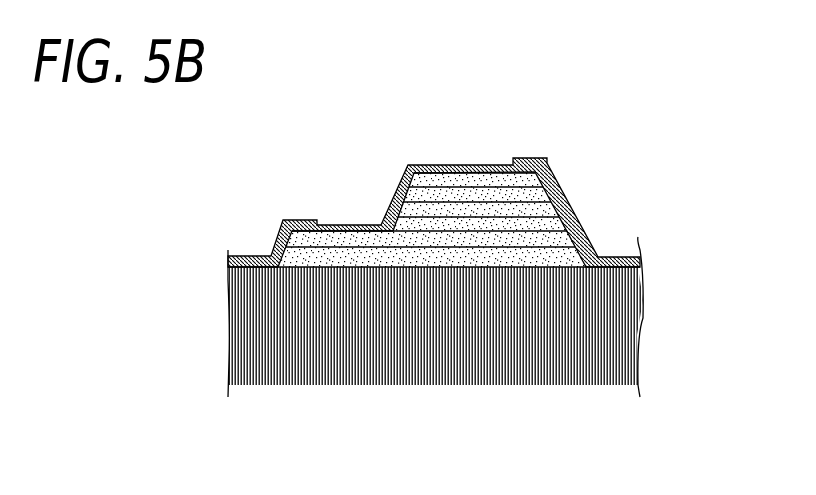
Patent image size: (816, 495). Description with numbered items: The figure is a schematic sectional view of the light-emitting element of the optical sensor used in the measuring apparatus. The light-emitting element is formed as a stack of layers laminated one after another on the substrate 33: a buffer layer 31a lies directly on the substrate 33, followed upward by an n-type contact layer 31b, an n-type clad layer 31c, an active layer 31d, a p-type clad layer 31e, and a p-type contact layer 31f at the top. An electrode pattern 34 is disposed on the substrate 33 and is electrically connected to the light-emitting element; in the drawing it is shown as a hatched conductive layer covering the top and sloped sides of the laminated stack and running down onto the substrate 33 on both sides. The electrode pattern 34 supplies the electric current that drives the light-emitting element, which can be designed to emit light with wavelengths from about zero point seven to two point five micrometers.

The substrate 33 is at (620, 343).
The electrode pattern 34 is at (282, 220).
The buffer layer 31a is at (558, 252).
The n-type contact layer 31b is at (557, 236).
The n-type clad layer 31c is at (573, 226).
The active layer 31d is at (567, 212).
The p-type clad layer 31e is at (553, 195).
The p-type contact layer 31f is at (537, 172).